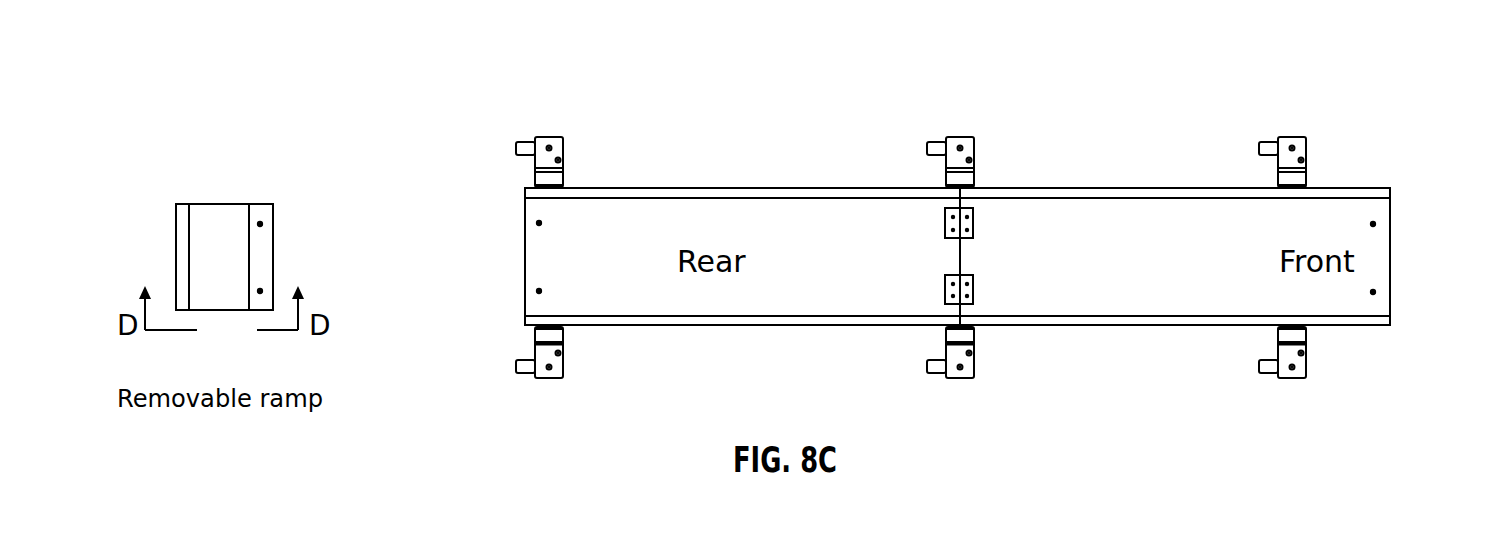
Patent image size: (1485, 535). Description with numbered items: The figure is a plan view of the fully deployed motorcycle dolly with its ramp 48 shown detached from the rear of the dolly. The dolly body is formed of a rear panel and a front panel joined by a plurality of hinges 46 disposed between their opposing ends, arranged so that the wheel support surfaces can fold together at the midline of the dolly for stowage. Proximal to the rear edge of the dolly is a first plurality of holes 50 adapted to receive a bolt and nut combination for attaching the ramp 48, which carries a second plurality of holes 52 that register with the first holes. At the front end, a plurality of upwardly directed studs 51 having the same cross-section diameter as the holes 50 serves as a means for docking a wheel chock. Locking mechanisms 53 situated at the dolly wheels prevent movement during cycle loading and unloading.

The hinges 46 is at (972, 277).
The ramp 48 is at (178, 188).
The first plurality of holes 50 is at (539, 223).
The upwardly directed studs 51 is at (1373, 224).
The second plurality of holes 52 is at (260, 291).
The locking mechanisms 53 is at (527, 147).